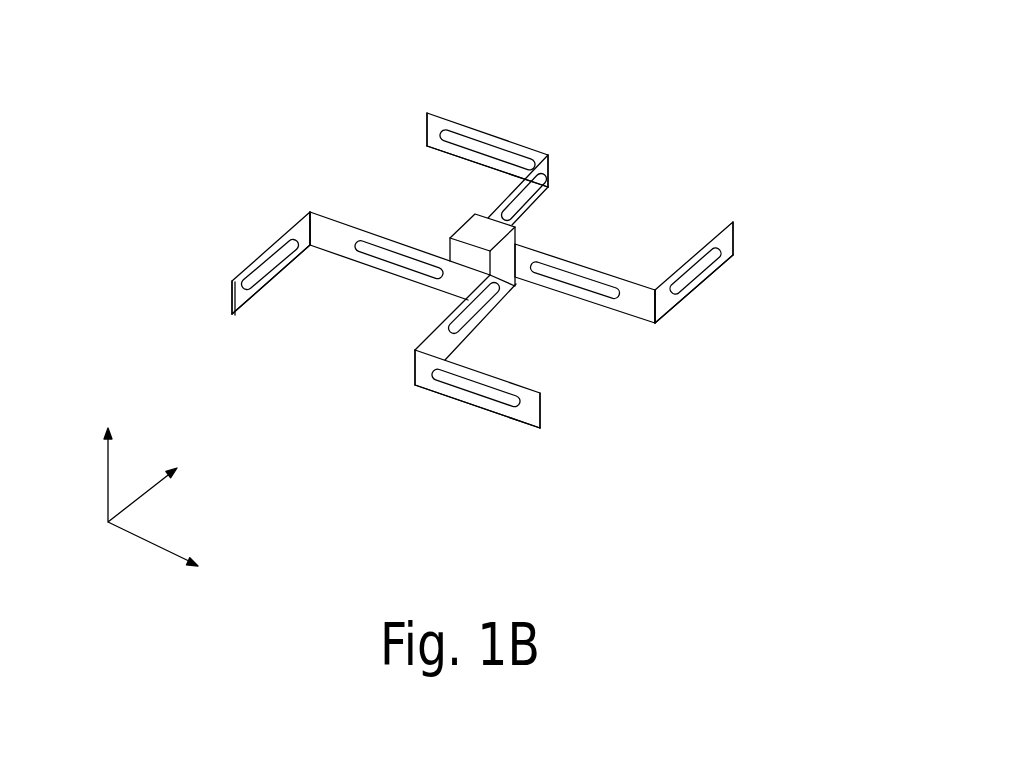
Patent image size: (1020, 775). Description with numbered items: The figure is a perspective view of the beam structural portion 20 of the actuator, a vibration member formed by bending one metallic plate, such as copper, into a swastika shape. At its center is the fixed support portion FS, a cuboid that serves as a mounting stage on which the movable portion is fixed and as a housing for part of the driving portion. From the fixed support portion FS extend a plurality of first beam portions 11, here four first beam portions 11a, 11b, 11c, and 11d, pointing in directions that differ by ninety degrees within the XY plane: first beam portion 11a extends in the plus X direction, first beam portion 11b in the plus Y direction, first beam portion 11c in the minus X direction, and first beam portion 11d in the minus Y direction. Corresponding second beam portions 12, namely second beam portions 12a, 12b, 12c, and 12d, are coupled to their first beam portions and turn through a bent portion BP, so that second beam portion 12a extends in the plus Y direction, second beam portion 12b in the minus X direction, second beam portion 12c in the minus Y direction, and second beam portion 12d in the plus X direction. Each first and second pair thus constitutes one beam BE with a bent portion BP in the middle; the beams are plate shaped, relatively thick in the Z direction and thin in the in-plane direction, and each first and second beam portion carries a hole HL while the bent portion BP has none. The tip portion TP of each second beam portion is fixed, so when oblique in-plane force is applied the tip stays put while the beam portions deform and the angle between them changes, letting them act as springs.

The beam structural portion 20 is at (640, 96).
The first beam portion 11 is at (478, 272).
The first beam portion 11a is at (622, 305).
The first beam portion 11b is at (552, 177).
The first beam portion 11c is at (337, 243).
The first beam portion 11d is at (438, 332).
The second beam portion 12 is at (460, 267).
The second beam portion 12a is at (690, 293).
The second beam portion 12b is at (432, 130).
The second beam portion 12c is at (230, 300).
The second beam portion 12d is at (532, 404).
The hole HL is at (472, 140).
The bent portion BP is at (548, 160).
The tip portion TP is at (430, 112).
The beam BE is at (404, 80).
The fixed support portion FS is at (462, 233).